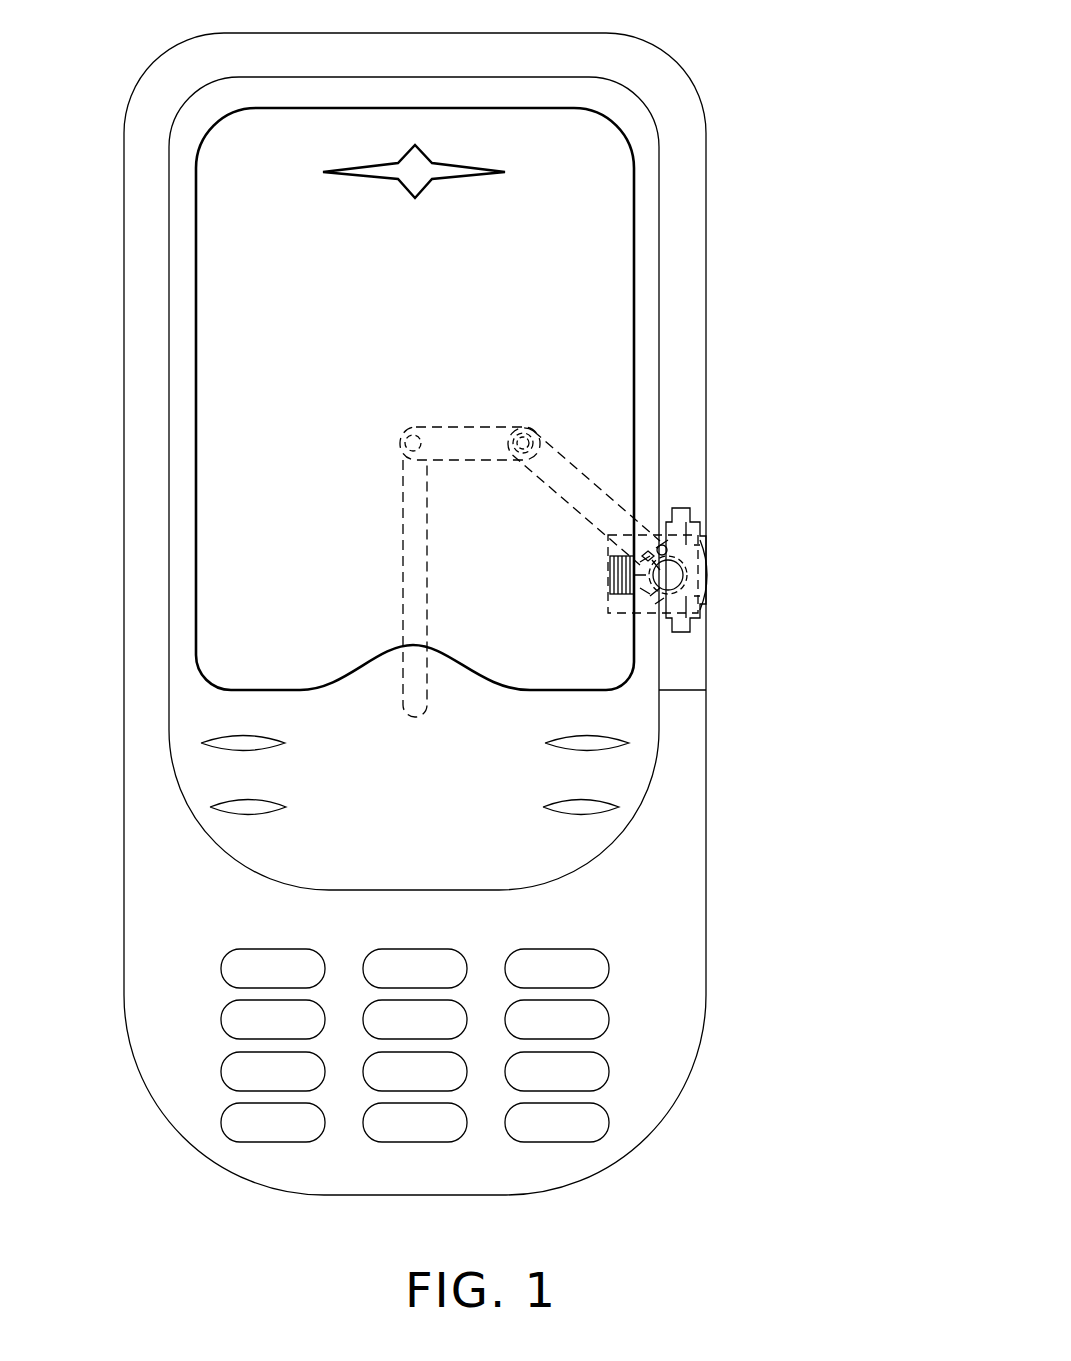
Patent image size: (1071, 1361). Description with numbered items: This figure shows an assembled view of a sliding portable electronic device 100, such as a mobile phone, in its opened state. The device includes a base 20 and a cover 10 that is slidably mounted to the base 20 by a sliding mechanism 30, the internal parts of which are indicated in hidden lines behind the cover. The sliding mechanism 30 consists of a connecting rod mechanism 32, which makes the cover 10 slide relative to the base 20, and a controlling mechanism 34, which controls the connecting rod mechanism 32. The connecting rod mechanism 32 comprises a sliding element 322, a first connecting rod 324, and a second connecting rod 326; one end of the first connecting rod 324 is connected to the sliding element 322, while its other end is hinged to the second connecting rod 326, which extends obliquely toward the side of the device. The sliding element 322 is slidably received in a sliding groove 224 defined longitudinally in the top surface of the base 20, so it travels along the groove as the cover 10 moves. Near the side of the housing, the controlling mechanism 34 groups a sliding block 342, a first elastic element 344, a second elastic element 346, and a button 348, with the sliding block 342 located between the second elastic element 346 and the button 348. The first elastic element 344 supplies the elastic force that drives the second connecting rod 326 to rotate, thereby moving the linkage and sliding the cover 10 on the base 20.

The portable electronic device 100 is at (690, 30).
The cover 10 is at (683, 167).
The base 20 is at (672, 947).
The sliding groove 224 is at (413, 561).
The sliding mechanism 30 is at (663, 463).
The connecting rod mechanism 32 is at (632, 404).
The sliding element 322 is at (418, 437).
The first connecting rod 324 is at (468, 445).
The second connecting rod 326 is at (568, 482).
The controlling mechanism 34 is at (740, 587).
The sliding block 342 is at (640, 592).
The first elastic element 344 is at (672, 572).
The second elastic element 346 is at (622, 592).
The button 348 is at (741, 563).